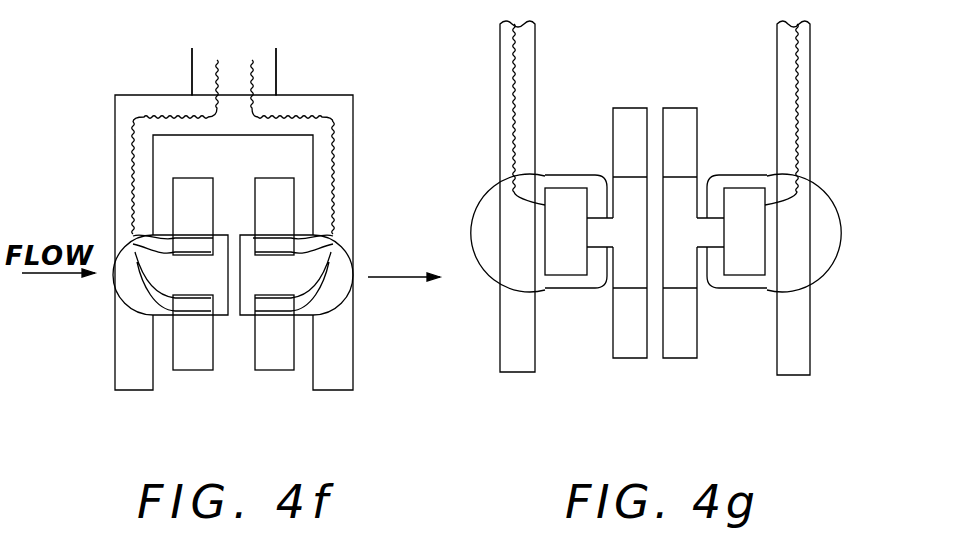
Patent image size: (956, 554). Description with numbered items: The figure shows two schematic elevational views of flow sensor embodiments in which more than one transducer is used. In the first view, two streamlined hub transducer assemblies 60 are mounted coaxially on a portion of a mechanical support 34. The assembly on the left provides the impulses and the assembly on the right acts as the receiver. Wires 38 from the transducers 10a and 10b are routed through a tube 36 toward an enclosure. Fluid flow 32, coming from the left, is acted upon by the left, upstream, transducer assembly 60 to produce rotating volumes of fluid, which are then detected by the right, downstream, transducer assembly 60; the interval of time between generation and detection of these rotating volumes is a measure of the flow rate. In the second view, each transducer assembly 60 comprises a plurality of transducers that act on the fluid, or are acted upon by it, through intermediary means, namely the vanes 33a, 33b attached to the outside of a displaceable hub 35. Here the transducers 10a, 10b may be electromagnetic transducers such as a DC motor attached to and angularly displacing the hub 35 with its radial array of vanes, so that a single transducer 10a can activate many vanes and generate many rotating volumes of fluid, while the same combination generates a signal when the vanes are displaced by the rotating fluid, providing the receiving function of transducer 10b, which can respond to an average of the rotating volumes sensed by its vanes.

In FIG. 4g, the transducer 10a is at (565, 188).
In FIG. 4g, the transducer 10b is at (747, 188).
In FIG. 4f, the fluid flow 32 is at (70, 273).
In FIG. 4g, the vane 33a is at (632, 108).
In FIG. 4g, the vane 33b is at (683, 108).
In FIG. 4f, the mechanical support 34 is at (115, 340).
In FIG. 4g, the mechanical support 34 is at (500, 355).
In FIG. 4g, the displaceable hub 35 is at (567, 288).
In FIG. 4f, the tube 36 is at (192, 81).
In FIG. 4f, the wires 38 is at (133, 149).
In FIG. 4g, the wires 38 is at (510, 80).
In FIG. 4f, the transducer assembly 60 is at (190, 370).
In FIG. 4g, the transducer assembly 60 is at (580, 345).